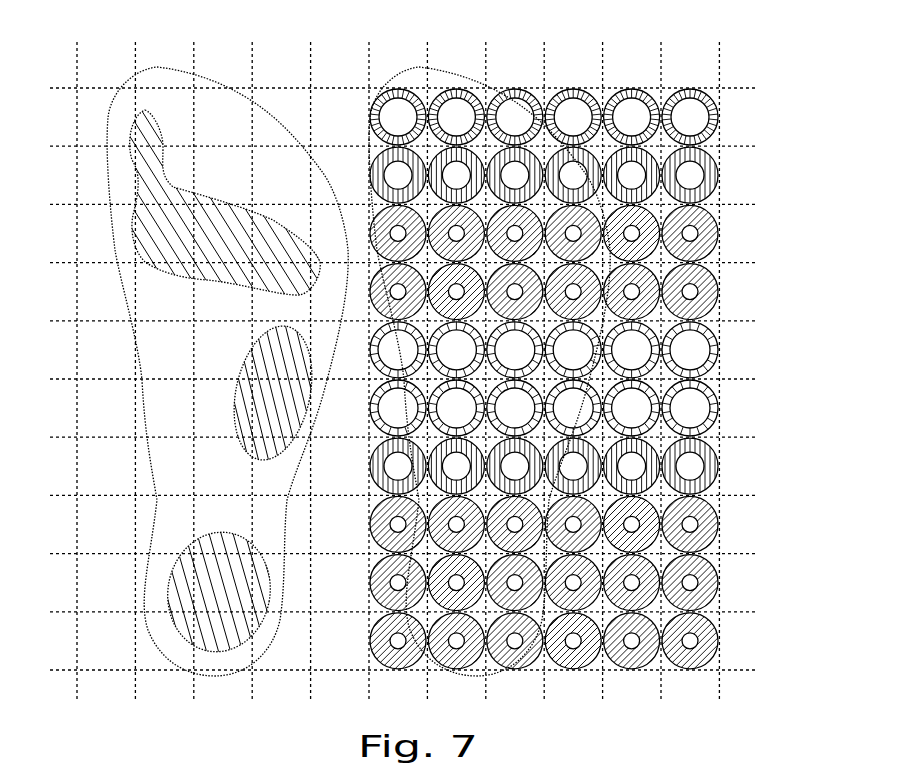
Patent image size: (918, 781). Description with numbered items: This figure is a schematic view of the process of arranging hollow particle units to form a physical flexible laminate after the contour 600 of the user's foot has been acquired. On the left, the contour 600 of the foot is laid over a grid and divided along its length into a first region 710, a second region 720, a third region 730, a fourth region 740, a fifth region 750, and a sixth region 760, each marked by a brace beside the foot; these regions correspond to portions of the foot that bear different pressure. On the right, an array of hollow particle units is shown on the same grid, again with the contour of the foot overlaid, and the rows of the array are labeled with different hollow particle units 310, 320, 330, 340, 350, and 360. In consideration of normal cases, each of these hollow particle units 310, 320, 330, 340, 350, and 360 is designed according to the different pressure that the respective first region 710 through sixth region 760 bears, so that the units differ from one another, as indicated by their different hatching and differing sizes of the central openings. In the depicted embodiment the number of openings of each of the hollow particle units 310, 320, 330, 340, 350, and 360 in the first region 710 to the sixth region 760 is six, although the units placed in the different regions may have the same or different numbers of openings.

The contour of the user's foot 600 is at (262, 108).
The hollow particle unit 310 is at (718, 117).
The hollow particle unit 320 is at (718, 175).
The hollow particle unit 330 is at (718, 233).
The hollow particle unit 340 is at (718, 350).
The hollow particle unit 350 is at (718, 466).
The hollow particle unit 360 is at (718, 582).
The first region 710 is at (98, 88).
The second region 720 is at (92, 146).
The third region 730 is at (96, 204).
The fourth region 740 is at (116, 320).
The fifth region 750 is at (133, 437).
The sixth region 760 is at (134, 495).